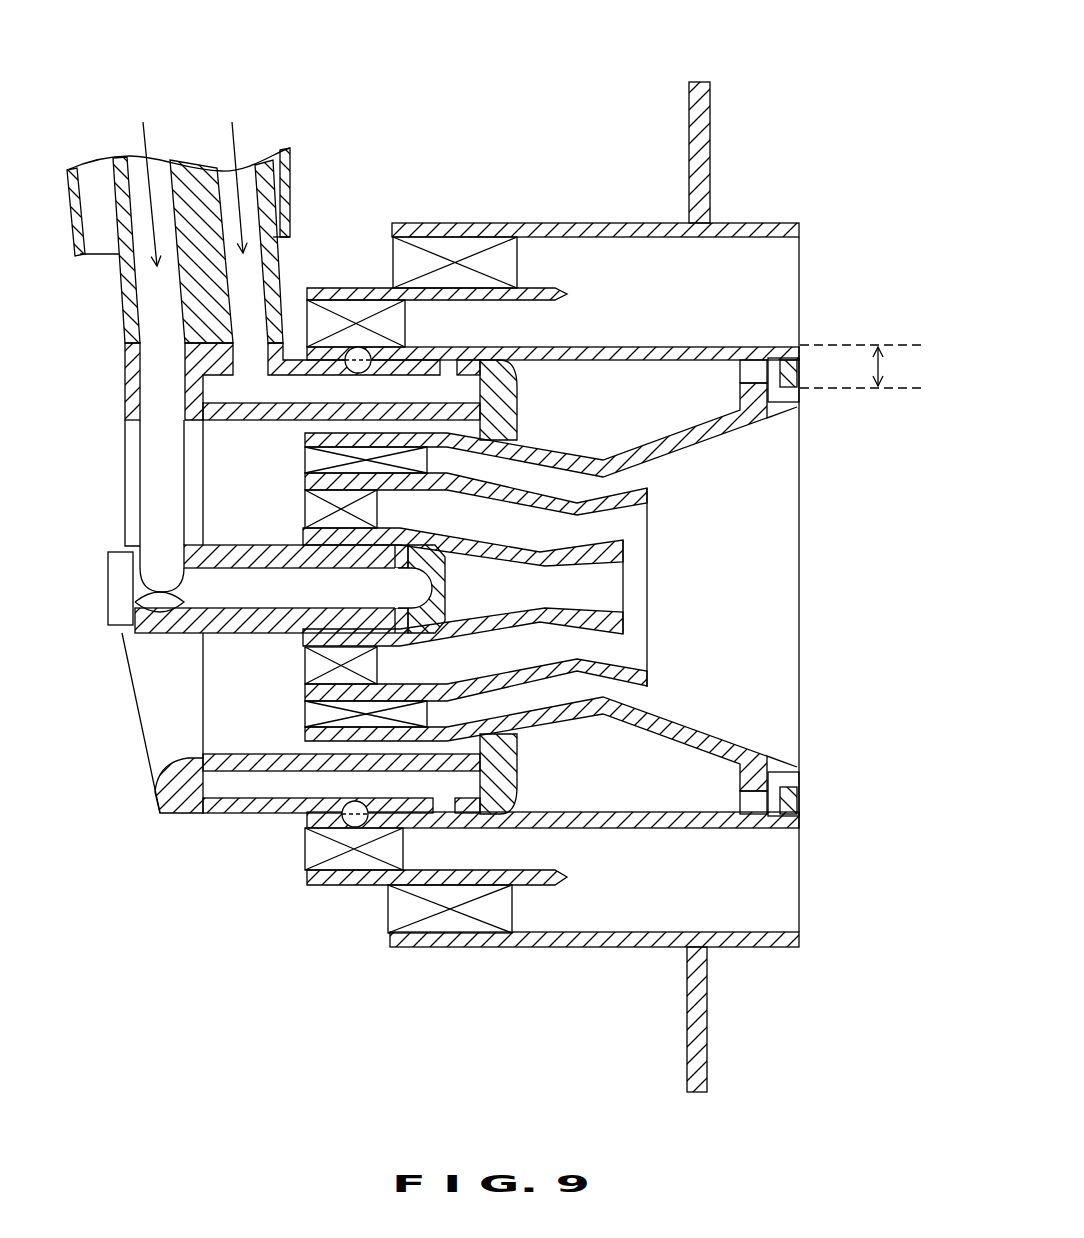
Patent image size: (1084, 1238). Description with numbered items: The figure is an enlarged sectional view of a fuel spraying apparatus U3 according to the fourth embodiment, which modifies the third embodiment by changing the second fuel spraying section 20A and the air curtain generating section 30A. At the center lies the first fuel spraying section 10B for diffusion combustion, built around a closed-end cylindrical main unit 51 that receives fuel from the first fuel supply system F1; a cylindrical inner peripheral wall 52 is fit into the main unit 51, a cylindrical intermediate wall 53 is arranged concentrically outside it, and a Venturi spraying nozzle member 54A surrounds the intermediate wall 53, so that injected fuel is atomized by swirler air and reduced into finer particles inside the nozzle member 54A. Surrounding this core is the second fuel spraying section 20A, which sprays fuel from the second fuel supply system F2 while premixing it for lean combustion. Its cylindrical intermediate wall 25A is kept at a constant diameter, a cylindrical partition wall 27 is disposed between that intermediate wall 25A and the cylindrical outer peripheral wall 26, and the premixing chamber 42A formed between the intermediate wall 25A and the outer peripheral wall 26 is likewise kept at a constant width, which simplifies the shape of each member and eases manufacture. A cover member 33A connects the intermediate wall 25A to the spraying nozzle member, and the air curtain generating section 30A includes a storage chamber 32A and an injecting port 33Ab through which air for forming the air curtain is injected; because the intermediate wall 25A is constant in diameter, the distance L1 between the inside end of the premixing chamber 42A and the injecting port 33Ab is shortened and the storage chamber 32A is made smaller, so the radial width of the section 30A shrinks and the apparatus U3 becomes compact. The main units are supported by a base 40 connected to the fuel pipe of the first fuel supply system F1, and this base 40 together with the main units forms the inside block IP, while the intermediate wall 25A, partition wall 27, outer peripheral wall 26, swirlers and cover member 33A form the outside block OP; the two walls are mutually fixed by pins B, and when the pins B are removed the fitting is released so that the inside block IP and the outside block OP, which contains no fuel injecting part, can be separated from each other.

The fuel spraying apparatus U3 is at (791, 86).
The first fuel supply system F1 is at (142, 178).
The second fuel supply system F2 is at (232, 172).
The cylindrical outer peripheral wall 26 is at (453, 225).
The cylindrical partition wall 27 is at (546, 294).
The pins B is at (360, 352).
The cylindrical intermediate wall 25A is at (582, 341).
The premixing chamber 42A is at (768, 309).
The air curtain generating section 30A is at (815, 356).
The distance L1 is at (862, 366).
The cover member 33A is at (801, 371).
The injecting port 33Ab is at (801, 397).
The cylindrical intermediate wall 53 is at (649, 493).
The spraying nozzle member 54A is at (747, 436).
The cylindrical inner peripheral wall 52 is at (625, 546).
The main unit 51 is at (438, 583).
The first fuel spraying section 10B is at (776, 565).
The base 40 is at (136, 692).
The inside block IP is at (138, 816).
The outside block OP is at (860, 920).
The storage chamber 32A is at (628, 414).
The second fuel spraying section 20A is at (644, 587).